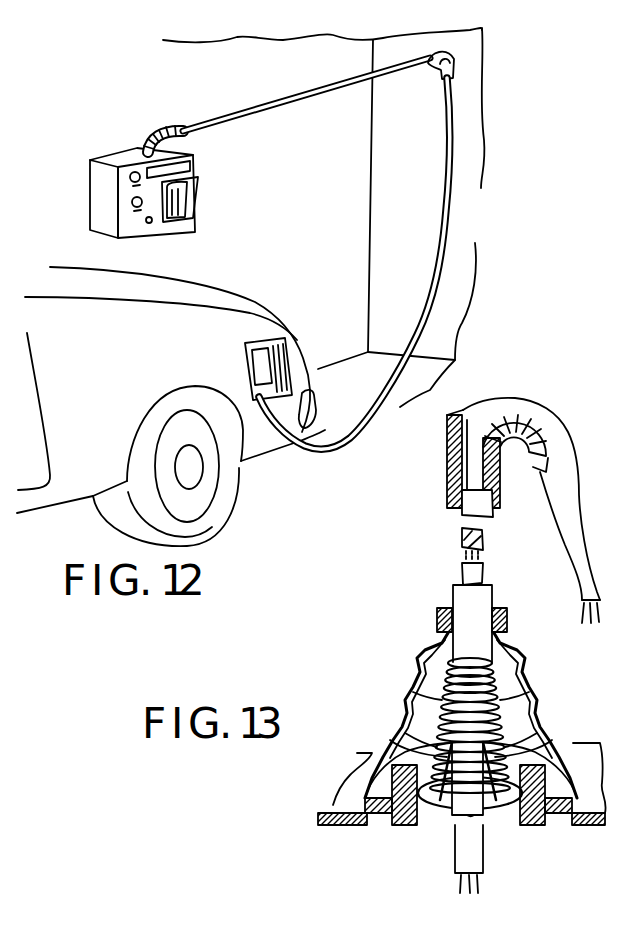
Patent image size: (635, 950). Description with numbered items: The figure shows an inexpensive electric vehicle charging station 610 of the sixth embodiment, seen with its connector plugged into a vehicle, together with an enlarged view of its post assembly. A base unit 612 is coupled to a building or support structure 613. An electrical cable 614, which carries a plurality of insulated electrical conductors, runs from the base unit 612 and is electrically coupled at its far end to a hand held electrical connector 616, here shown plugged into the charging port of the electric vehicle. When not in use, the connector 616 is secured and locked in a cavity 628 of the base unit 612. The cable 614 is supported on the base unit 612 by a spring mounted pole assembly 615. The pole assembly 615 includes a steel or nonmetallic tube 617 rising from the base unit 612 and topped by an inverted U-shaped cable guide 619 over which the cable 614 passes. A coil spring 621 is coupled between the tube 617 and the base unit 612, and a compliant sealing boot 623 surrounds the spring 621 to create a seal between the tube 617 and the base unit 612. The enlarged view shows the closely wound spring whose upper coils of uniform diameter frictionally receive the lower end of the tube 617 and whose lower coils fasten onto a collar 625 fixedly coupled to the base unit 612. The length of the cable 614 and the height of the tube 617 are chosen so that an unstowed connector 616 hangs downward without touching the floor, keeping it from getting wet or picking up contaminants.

In FIG. 12, the electric vehicle charging station 610 is at (133, 117).
In FIG. 12, the base unit 612 is at (113, 152).
In FIG. 13, the base unit 612 is at (320, 832).
In FIG. 12, the building or support structure 613 is at (488, 118).
In FIG. 12, the electrical cable 614 is at (354, 263).
In FIG. 13, the electrical cable 614 is at (574, 563).
In FIG. 12, the spring mounted pole assembly 615 is at (318, 110).
In FIG. 12, the electrical connector 616 is at (171, 406).
In FIG. 12, the tube 617 is at (295, 90).
In FIG. 13, the tube 617 is at (454, 586).
In FIG. 13, the inverted U-shaped cable guide 619 is at (447, 450).
In FIG. 13, the coil spring 621 is at (398, 749).
In FIG. 13, the compliant sealing boot 623 is at (420, 660).
In FIG. 13, the collar 625 is at (497, 825).
In FIG. 12, the cavity 628 is at (178, 218).